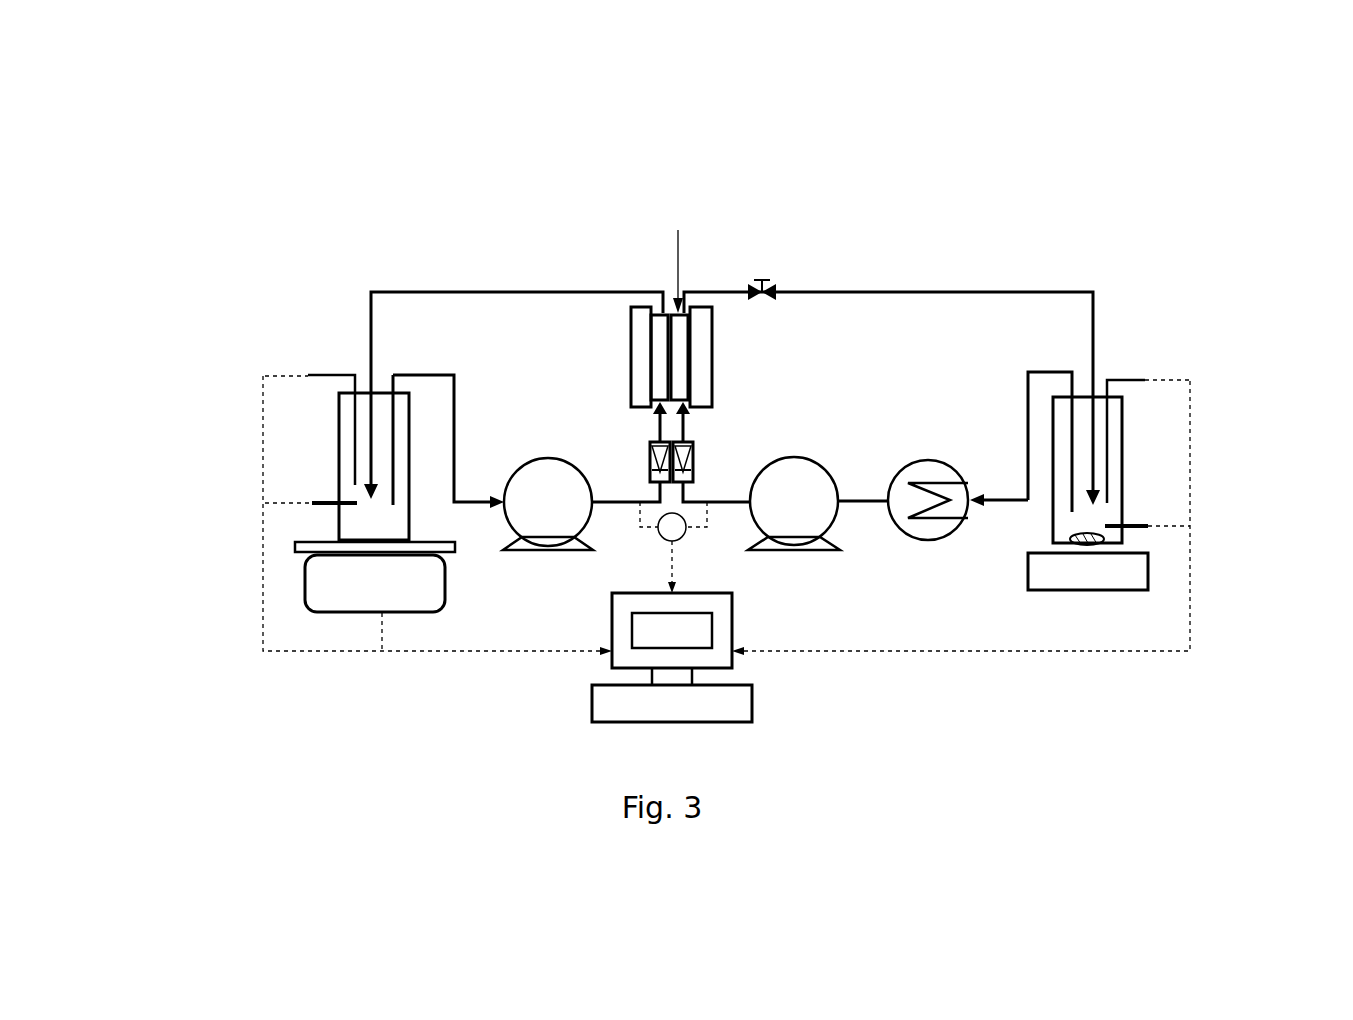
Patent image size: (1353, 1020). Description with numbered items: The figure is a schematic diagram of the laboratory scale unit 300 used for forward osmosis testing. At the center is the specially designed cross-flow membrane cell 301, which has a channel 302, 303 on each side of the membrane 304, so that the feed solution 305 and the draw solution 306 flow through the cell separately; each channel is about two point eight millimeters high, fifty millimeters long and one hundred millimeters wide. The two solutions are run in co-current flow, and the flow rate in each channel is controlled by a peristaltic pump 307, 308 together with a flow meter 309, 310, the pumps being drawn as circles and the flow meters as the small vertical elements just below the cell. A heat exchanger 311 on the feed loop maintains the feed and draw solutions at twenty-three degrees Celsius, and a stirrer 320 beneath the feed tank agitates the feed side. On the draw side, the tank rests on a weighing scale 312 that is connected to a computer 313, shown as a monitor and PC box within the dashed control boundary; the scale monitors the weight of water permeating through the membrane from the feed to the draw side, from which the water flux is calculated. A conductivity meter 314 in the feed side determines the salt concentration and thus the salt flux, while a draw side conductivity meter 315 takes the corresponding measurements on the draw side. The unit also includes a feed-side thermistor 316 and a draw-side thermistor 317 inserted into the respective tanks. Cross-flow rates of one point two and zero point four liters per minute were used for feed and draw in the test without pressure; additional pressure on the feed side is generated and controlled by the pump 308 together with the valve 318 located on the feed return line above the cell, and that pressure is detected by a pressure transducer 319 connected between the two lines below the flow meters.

The laboratory scale unit 300 is at (350, 170).
The cross-flow membrane cell 301 is at (724, 369).
The channel 302 is at (655, 357).
The channel 303 is at (696, 355).
The membrane 304 is at (663, 238).
The feed solution 305 is at (1088, 513).
The draw solution 306 is at (372, 514).
The peristaltic pump 307 is at (548, 519).
The peristaltic pump 308 is at (794, 518).
The flow meter 309 is at (599, 446).
The flow meter 310 is at (700, 462).
The heat exchanger 311 is at (924, 532).
The weighing scale 312 is at (375, 577).
The computer 313 is at (672, 674).
The conductivity meter 314 is at (1213, 556).
The draw side conductivity meter 315 is at (244, 530).
The feed-side thermistor 316 is at (1204, 419).
The draw-side thermistor 317 is at (251, 405).
The valve 318 is at (784, 279).
The pressure transducer 319 is at (705, 546).
The stirrer 320 is at (1089, 571).